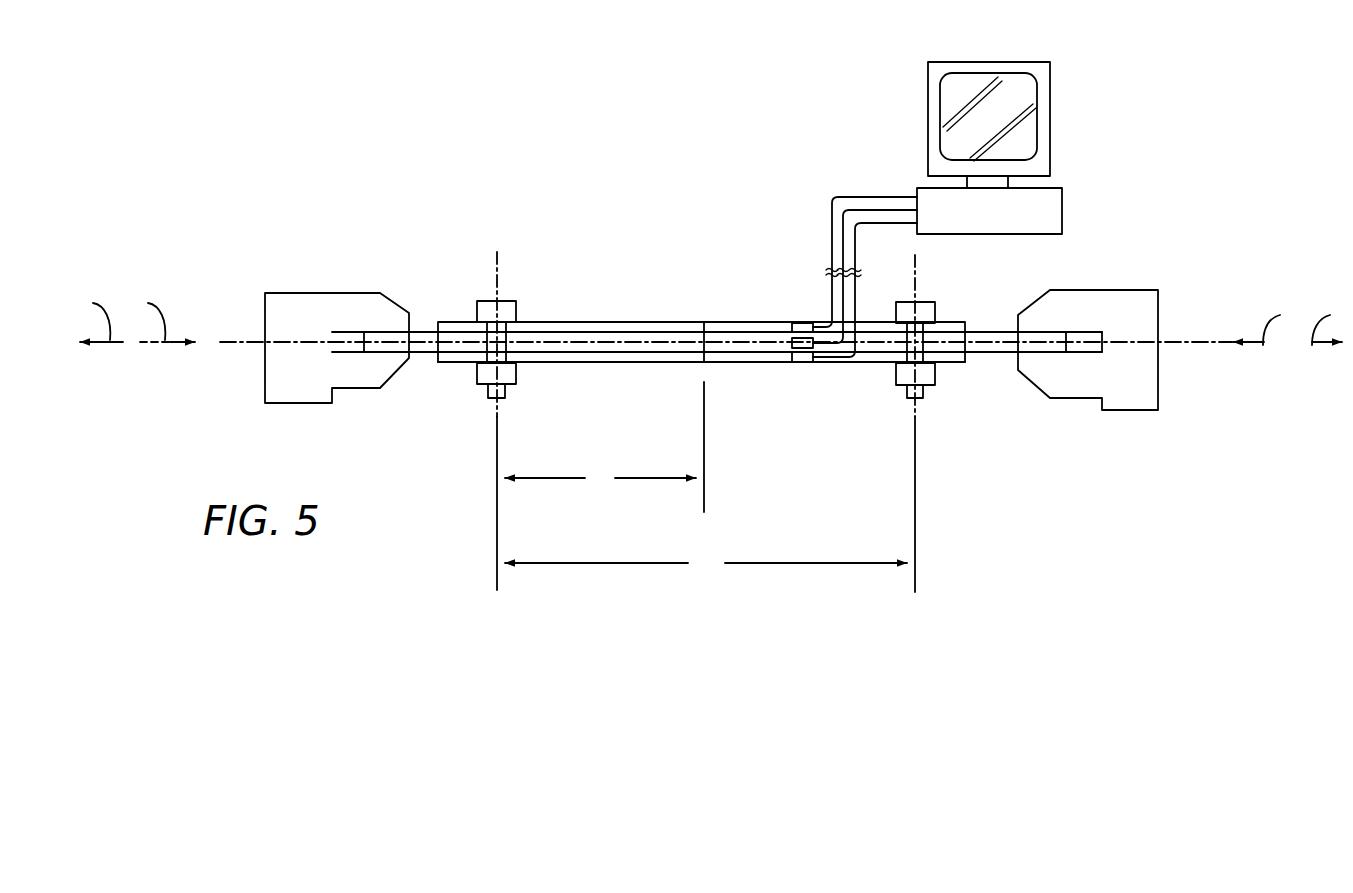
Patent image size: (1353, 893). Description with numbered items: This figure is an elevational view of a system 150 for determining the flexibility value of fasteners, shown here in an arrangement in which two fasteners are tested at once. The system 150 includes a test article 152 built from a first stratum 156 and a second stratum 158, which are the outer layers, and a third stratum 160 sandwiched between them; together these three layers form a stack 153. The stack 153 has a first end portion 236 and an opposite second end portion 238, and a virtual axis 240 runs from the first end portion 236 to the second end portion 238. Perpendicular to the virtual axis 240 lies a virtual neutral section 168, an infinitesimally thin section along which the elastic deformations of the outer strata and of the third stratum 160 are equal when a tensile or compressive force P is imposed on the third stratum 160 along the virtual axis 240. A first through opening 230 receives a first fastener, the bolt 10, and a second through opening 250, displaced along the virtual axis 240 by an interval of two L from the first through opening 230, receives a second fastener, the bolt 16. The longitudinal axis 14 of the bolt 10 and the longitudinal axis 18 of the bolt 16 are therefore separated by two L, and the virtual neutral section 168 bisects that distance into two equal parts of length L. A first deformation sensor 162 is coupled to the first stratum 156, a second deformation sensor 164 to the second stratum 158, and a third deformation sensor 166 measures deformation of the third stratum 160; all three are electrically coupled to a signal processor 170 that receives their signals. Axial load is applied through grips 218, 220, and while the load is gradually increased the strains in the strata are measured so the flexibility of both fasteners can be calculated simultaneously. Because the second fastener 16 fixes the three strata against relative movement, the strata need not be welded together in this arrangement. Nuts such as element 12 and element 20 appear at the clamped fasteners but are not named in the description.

The bolt 10 is at (481, 285).
The first clamp nut 12 is at (478, 372).
The longitudinal axis of the first fastener 14 is at (497, 450).
The fastener 16 is at (929, 289).
The longitudinal axis of the second fastener 18 is at (915, 288).
The second clamp nut 20 is at (935, 377).
The system 150 is at (392, 113).
The test article 152 is at (954, 480).
The stack 153 is at (824, 445).
The first stratum 156 is at (610, 327).
The second stratum 158 is at (558, 357).
The third stratum 160 is at (638, 347).
The first deformation sensor 162 is at (802, 327).
The second deformation sensor 164 is at (805, 360).
The third deformation sensor 166 is at (792, 343).
The virtual neutral section 168 is at (704, 342).
The signal processor 170 is at (1100, 155).
The grip 218 is at (1175, 249).
The grip 220 is at (320, 268).
The first through opening 230 is at (500, 342).
The first end portion 236 is at (999, 297).
The second end portion 238 is at (395, 260).
The virtual axis 240 is at (248, 340).
The second through opening 250 is at (923, 350).